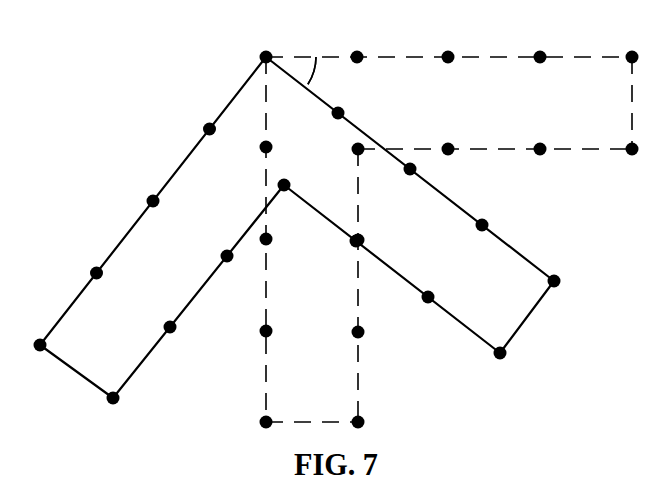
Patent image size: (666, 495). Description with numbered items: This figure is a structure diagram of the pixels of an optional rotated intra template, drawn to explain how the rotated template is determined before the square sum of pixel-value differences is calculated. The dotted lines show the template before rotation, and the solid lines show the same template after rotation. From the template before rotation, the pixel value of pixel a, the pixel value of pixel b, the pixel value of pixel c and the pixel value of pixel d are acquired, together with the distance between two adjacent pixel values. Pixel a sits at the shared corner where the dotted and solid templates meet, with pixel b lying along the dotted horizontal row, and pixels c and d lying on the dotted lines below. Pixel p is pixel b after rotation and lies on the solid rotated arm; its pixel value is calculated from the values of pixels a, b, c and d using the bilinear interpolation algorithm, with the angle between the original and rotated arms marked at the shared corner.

The pixel a is at (253, 38).
The pixel b is at (362, 37).
The pixel c is at (254, 146).
The pixel d is at (345, 156).
The pixel p is at (349, 104).